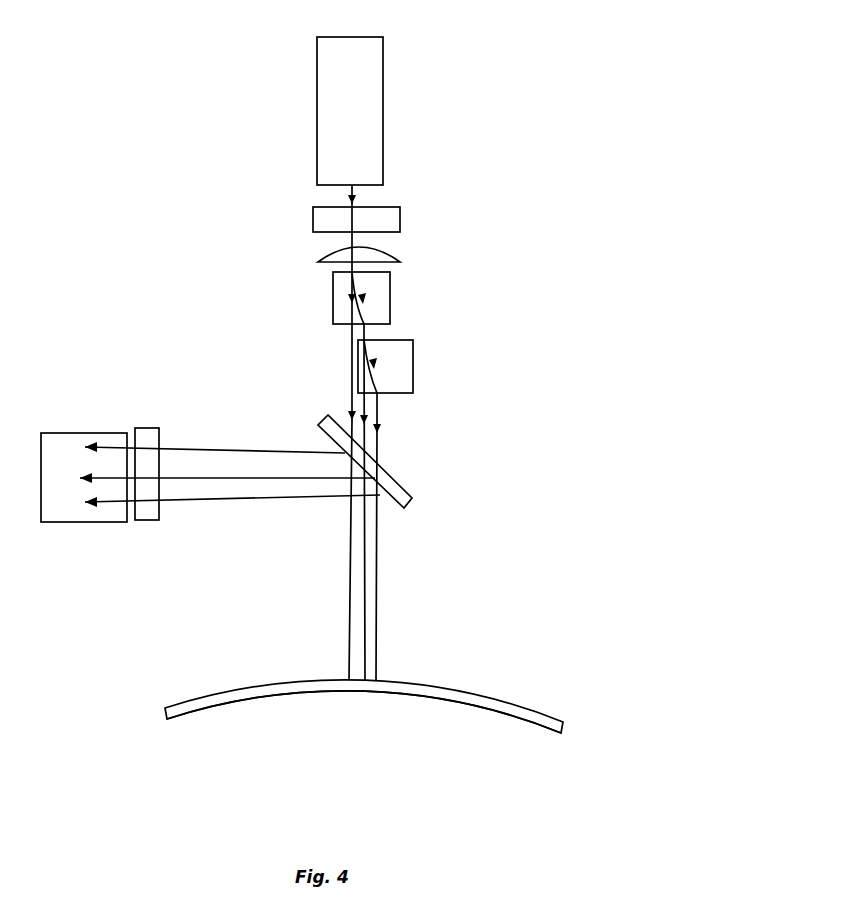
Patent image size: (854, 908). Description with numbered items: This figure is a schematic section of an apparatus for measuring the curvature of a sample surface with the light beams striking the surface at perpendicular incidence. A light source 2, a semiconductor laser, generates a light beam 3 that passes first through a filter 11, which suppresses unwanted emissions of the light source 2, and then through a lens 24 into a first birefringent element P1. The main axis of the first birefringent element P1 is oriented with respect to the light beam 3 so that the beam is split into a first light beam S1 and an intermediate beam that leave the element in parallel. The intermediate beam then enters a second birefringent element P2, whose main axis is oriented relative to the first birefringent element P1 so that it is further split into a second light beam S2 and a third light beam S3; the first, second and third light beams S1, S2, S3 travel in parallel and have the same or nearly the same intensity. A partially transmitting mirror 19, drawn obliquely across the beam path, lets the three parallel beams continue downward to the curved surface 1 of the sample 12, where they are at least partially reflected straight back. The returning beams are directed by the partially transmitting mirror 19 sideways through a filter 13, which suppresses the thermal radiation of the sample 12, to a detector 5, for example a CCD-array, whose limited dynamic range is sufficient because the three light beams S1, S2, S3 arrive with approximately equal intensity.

The light source 2 is at (365, 100).
The light beam 3 is at (365, 193).
The filter 11 is at (400, 220).
The lens 24 is at (400, 257).
The first birefringent element P1 is at (383, 305).
The second birefringent element P2 is at (400, 373).
The partially transmitting mirror 19 is at (412, 499).
The detector 5 is at (55, 442).
The filter 13 is at (147, 433).
The first light beam S1 is at (182, 502).
The second light beam S2 is at (228, 480).
The third light beam S3 is at (267, 453).
The surface 1 is at (215, 688).
The sample 12 is at (272, 690).